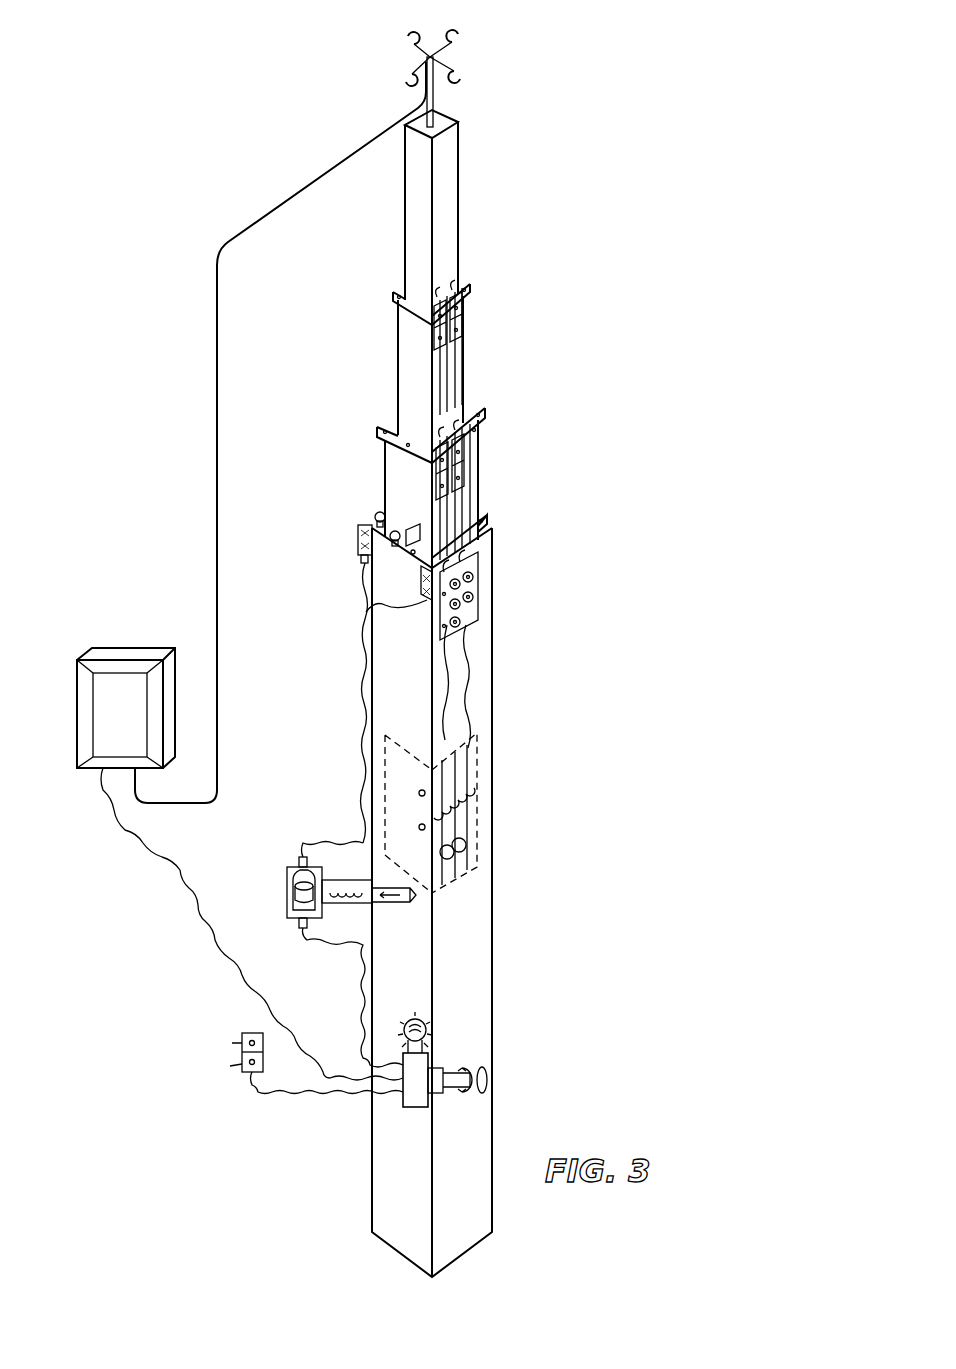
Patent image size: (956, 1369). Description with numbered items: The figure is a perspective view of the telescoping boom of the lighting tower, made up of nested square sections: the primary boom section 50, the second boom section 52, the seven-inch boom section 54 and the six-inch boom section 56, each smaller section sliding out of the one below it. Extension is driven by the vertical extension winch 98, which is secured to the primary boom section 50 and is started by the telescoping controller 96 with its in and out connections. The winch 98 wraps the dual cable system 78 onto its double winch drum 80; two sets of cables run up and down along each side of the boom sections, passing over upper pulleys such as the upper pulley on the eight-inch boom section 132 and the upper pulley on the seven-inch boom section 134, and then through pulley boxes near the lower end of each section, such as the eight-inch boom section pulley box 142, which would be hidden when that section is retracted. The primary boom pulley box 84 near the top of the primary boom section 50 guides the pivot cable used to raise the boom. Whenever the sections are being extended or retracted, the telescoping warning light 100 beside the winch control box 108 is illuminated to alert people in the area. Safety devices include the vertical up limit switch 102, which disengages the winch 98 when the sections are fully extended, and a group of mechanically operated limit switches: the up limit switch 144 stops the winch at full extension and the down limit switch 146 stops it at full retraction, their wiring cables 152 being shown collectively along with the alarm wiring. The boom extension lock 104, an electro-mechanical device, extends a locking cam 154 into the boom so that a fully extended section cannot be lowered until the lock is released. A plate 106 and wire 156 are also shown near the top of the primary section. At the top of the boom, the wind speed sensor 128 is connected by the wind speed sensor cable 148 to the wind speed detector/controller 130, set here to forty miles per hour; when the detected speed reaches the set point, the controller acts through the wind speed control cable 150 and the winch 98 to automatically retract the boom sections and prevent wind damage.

The primary boom section 50 is at (492, 708).
The second boom section 52 is at (478, 498).
The 7" boom section 54 is at (463, 366).
The 6" boom section 56 is at (458, 220).
The dual cable system 78 is at (466, 680).
The double winch drum 80 is at (490, 1075).
The primary boom pulley box 84 is at (478, 594).
The telescoping controller 96 is at (250, 1033).
The vertical extension winch 98 is at (433, 1100).
The telescoping warning light 100 is at (408, 1015).
The vertical up limit switch 102 is at (358, 538).
The boom extension lock 104 is at (287, 880).
The contact plate 106 is at (421, 582).
The winch control box 108 is at (412, 1108).
The wind speed sensor 128 is at (445, 60).
The wind speed detector/controller 130 is at (130, 650).
The upper pulley on the 8" boom section 132 is at (470, 460).
The upper pulley on the 7" boom section 134 is at (463, 312).
The 8" boom section pulley box 142 is at (474, 790).
The up limit switch 144 is at (382, 512).
The down limit switch 146 is at (415, 525).
The wind speed sensor cable 148 is at (215, 480).
The wind speed control cable 150 is at (200, 934).
The wiring cables 152 is at (360, 952).
The locking cam 154 is at (390, 903).
The sensor wire 156 is at (395, 605).